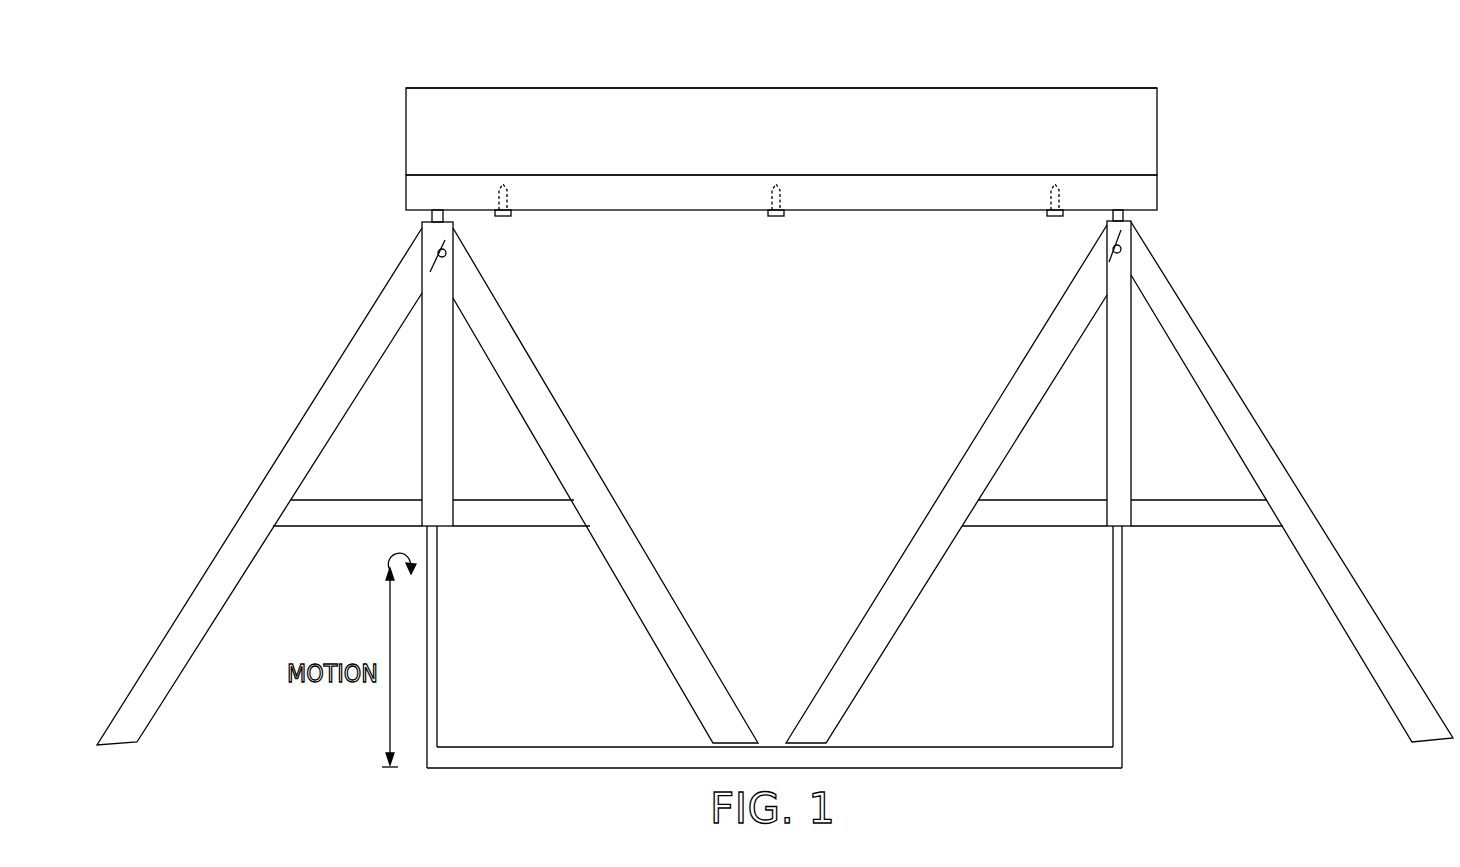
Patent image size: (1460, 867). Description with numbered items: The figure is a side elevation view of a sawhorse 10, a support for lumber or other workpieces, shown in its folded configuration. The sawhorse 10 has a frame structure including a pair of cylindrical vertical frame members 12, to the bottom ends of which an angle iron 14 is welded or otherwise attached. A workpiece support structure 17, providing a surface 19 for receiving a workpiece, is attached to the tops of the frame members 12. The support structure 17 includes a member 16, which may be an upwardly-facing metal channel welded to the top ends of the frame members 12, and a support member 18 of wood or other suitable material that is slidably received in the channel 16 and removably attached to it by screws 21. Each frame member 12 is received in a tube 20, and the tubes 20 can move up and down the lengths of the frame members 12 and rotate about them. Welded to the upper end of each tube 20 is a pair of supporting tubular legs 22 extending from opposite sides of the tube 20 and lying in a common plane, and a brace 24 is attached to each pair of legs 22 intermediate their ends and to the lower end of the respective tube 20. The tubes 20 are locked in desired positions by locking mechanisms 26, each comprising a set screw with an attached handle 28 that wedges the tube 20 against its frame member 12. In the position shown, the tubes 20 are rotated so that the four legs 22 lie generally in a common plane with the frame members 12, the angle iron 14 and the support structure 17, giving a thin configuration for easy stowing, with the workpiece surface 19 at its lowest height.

The sawhorse 10 is at (1163, 63).
The vertical frame member 12 is at (438, 645).
The angle iron 14 is at (922, 757).
The channel member 16 is at (1010, 188).
The workpiece support structure 17 is at (395, 145).
The support member 18 is at (995, 103).
The workpiece surface 19 is at (795, 85).
The tube 20 is at (443, 452).
The screw 21 is at (505, 218).
The supporting tubular leg 22 is at (220, 582).
The brace 24 is at (495, 528).
The locking mechanism 26 is at (1122, 250).
The handle 28 is at (1110, 258).